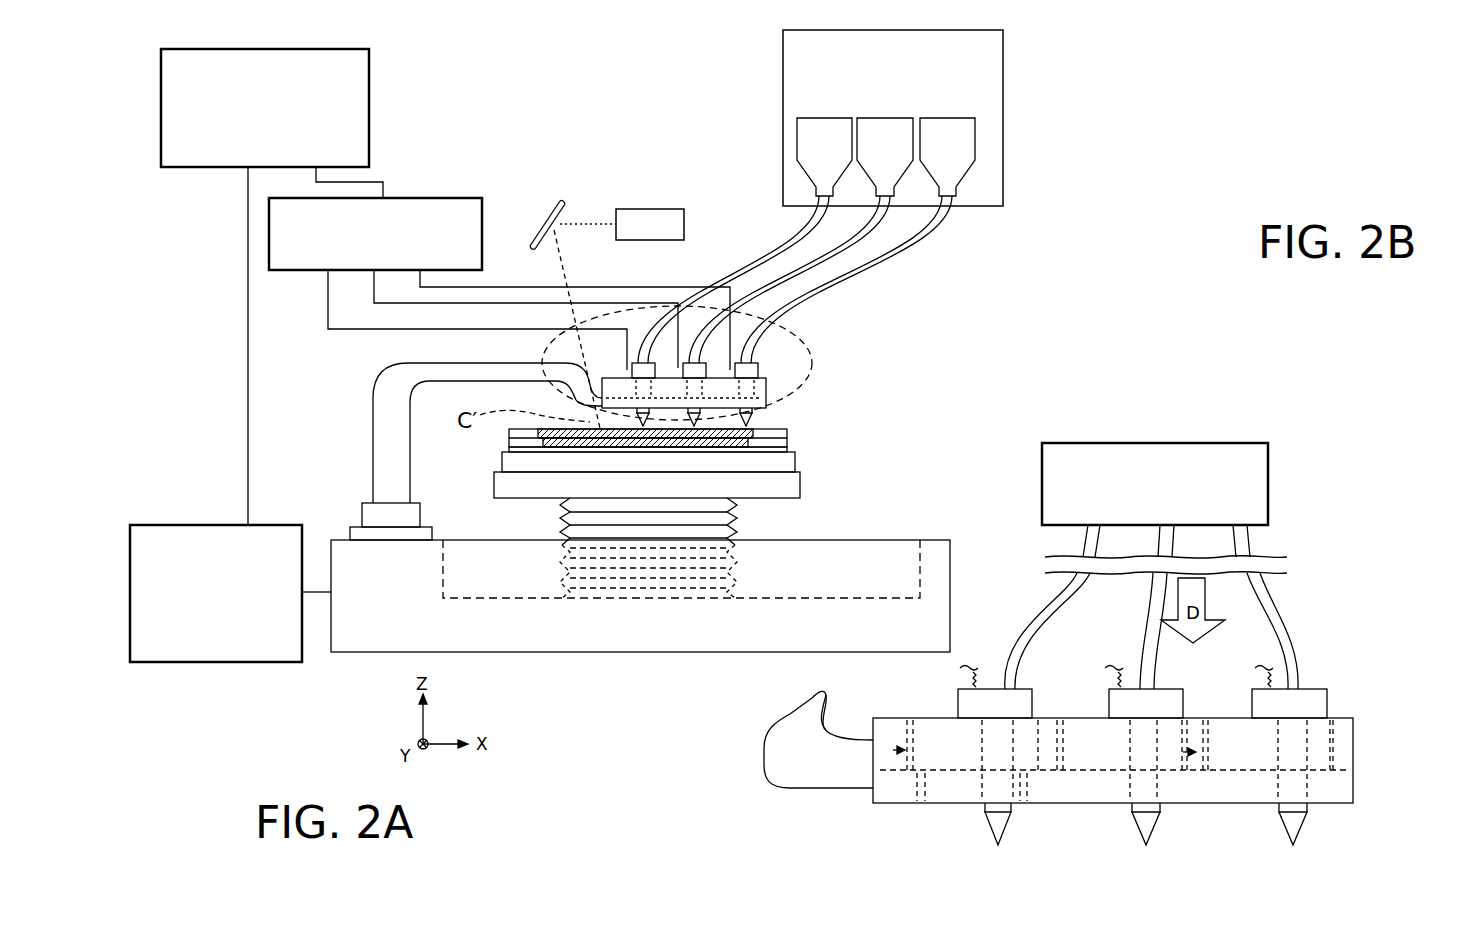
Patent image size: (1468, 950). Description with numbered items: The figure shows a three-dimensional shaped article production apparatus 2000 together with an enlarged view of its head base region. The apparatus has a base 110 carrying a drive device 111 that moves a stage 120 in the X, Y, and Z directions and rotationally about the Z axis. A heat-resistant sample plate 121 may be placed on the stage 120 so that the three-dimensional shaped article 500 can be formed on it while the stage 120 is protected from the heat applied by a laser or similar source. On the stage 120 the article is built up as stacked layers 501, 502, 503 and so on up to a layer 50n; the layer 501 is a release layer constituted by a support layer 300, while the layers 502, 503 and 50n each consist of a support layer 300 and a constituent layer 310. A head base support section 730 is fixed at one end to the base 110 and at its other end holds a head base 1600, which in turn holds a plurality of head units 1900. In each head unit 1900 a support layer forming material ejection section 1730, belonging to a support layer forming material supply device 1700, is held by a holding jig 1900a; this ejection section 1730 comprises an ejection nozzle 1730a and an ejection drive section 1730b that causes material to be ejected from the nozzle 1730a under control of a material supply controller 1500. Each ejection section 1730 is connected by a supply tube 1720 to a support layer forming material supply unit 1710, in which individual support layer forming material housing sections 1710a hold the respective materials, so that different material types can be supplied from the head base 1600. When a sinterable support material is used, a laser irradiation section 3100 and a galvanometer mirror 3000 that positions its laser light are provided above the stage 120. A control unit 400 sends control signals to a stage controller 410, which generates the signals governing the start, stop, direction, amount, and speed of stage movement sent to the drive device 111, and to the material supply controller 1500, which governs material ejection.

In FIG. 2A, the control unit 400 is at (370, 64).
In FIG. 2A, the material supply controller 1500 is at (482, 205).
In FIG. 2A, the galvanometer mirror 3000 is at (562, 200).
In FIG. 2A, the laser irradiation section 3100 is at (684, 222).
In FIG. 2A, the head base support section 730 is at (400, 402).
In FIG. 2B, the head base support section 730 is at (866, 740).
In FIG. 2A, the head base 1600 is at (768, 378).
In FIG. 2B, the head base 1600 is at (1053, 794).
In FIG. 2A, the support layer forming material supply unit 1710 is at (1003, 77).
In FIG. 2B, the support layer forming material supply unit 1710 is at (1148, 443).
In FIG. 2A, the support layer forming material housing section 1710a is at (825, 145).
In FIG. 2A, the supply tube 1720 is at (886, 258).
In FIG. 2B, the supply tube 1720 is at (1165, 538).
In FIG. 2A, the three-dimensional shaped article production apparatus 2000 is at (1180, 194).
In FIG. 2A, the layer 50n is at (938, 357).
In FIG. 2A, the layer 503 is at (788, 432).
In FIG. 2A, the layer 502 is at (788, 440).
In FIG. 2A, the layer 501 is at (788, 446).
In FIG. 2A, the three-dimensional shaped article 500 is at (955, 306).
In FIG. 2A, the support layer 300 is at (508, 448).
In FIG. 2A, the constituent layer 310 is at (570, 442).
In FIG. 2A, the sample plate 121 is at (790, 462).
In FIG. 2A, the stage 120 is at (795, 483).
In FIG. 2A, the drive device 111 is at (578, 527).
In FIG. 2A, the base 110 is at (397, 608).
In FIG. 2A, the stage controller 410 is at (273, 522).
In FIG. 2B, the support layer forming material supply device 1700 is at (1020, 324).
In FIG. 2B, the support layer forming material ejection section 1730 is at (1350, 362).
In FIG. 2B, the ejection drive section 1730b is at (1310, 698).
In FIG. 2B, the ejection nozzle 1730a is at (1340, 762).
In FIG. 2B, the head unit 1900 is at (672, 745).
In FIG. 2B, the holding jig 1900a is at (892, 750).